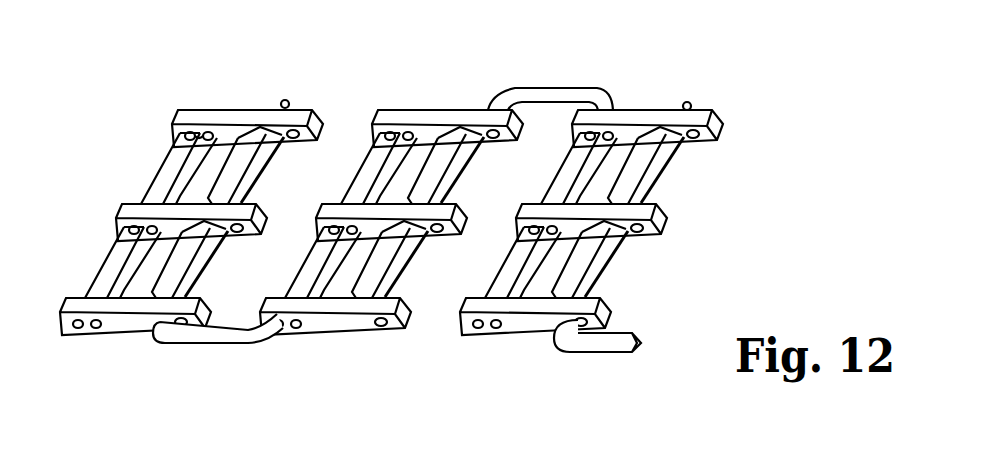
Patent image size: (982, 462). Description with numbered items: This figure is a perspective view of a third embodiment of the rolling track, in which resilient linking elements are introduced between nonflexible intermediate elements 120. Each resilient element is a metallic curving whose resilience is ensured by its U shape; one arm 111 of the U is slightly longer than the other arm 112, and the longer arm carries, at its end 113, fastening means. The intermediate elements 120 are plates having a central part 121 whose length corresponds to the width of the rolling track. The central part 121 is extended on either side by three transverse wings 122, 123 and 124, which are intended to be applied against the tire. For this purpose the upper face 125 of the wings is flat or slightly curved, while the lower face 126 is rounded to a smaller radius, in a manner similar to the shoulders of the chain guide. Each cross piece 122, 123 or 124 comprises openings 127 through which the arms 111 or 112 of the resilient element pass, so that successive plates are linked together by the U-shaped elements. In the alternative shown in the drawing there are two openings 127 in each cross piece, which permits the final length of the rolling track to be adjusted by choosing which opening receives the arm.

The arm of the U 111 is at (257, 132).
The other arm of the U 112 is at (381, 156).
The end of the longer arm 113 is at (289, 102).
The nonflexible element 120 is at (513, 230).
The central part 121 is at (624, 146).
The transverse wing 122 is at (697, 121).
The transverse wing 123 is at (661, 212).
The transverse wing 124 is at (595, 303).
The upper face 125 is at (183, 212).
The lower face 126 is at (118, 338).
The openings 127 is at (208, 144).